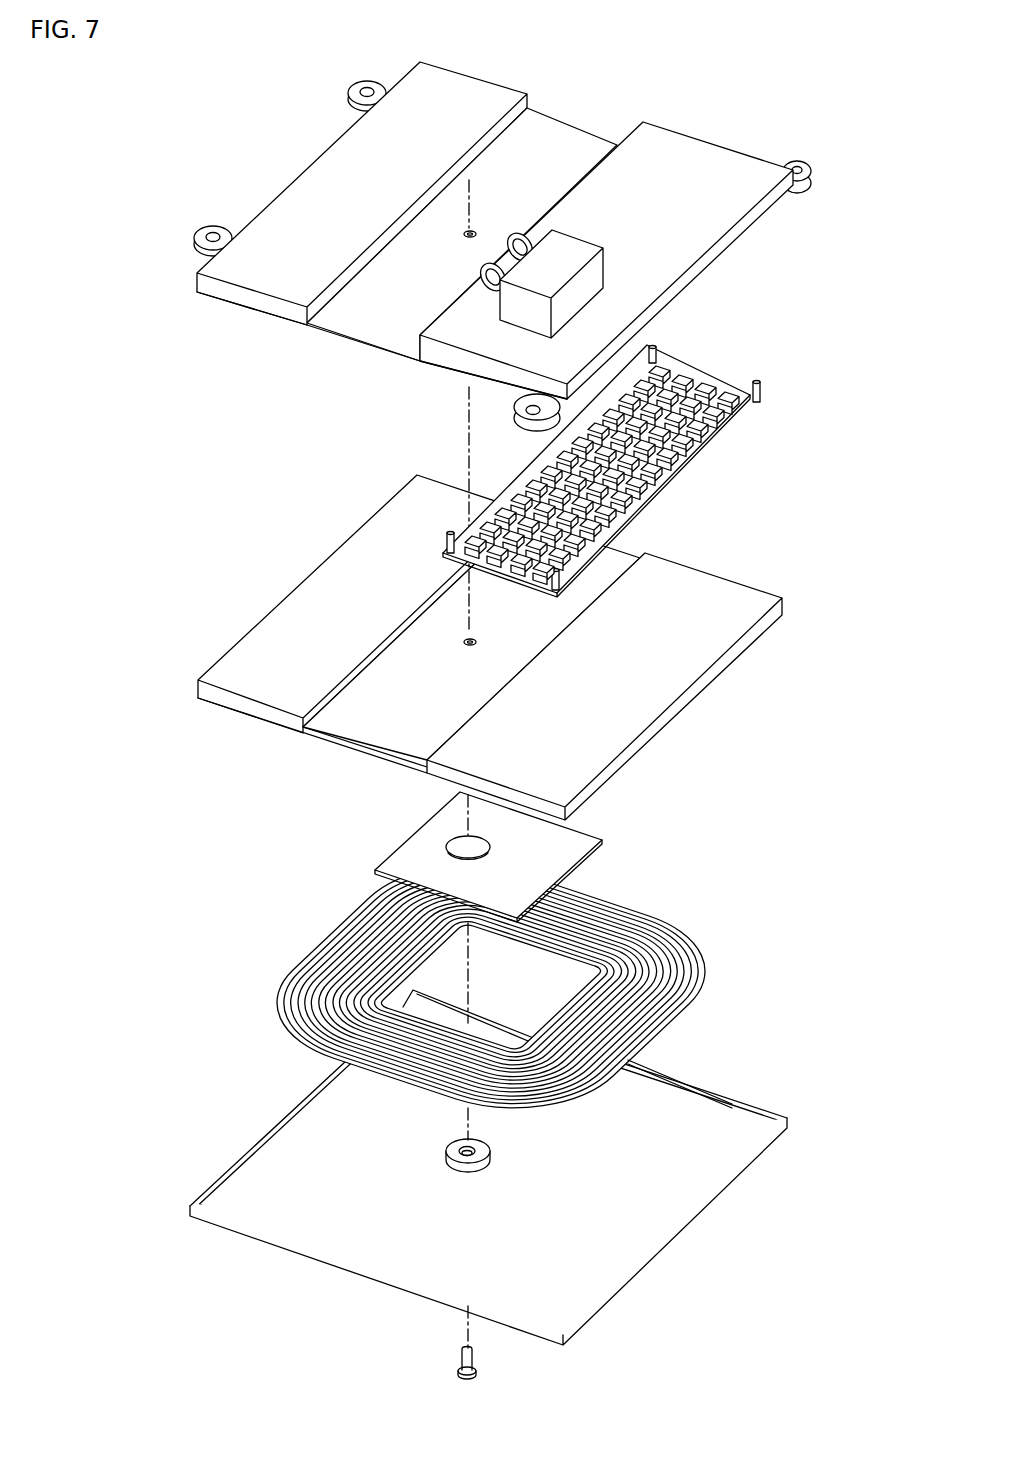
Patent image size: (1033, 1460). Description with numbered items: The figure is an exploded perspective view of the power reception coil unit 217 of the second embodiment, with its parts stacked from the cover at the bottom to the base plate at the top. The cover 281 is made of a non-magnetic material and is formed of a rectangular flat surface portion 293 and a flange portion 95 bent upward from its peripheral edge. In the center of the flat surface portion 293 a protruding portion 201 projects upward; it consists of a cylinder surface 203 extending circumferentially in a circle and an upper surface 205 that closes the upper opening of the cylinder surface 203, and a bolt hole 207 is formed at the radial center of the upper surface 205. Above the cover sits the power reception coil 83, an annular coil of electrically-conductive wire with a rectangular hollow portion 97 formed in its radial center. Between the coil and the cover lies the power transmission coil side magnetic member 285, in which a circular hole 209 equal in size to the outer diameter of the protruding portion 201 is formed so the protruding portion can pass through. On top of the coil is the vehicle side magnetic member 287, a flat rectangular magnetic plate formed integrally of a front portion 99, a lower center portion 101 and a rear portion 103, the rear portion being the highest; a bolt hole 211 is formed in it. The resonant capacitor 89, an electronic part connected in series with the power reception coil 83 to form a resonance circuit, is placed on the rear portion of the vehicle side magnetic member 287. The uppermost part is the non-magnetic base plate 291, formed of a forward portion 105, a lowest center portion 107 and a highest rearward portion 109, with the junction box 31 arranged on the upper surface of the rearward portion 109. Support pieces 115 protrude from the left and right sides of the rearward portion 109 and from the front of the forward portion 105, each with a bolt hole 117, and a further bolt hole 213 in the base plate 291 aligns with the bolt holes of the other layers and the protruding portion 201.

The power reception coil unit 217 is at (208, 144).
The base plate 291 is at (508, 235).
The forward portion 105 is at (317, 168).
The center portion 107 is at (368, 333).
The rearward portion 109 is at (468, 337).
The support pieces 115 is at (356, 90).
The bolt holes 117 is at (213, 234).
The bolt hole 213 is at (475, 233).
The junction box 31 is at (578, 245).
The resonant capacitor 89 is at (724, 366).
The vehicle side magnetic member 287 is at (517, 647).
The front portion 99 is at (307, 595).
The center portion 101 is at (342, 723).
The rear portion 103 is at (637, 690).
The bolt hole 211 is at (468, 645).
The power transmission coil side magnetic member 285 is at (457, 852).
The circular hole 209 is at (460, 845).
The power reception coil 83 is at (500, 977).
The hollow portion 97 is at (433, 972).
The cover 281 is at (490, 1180).
The flat surface portion 293 is at (327, 1228).
The flange portion 95 is at (434, 1272).
The protruding portion 201 is at (467, 1165).
The upper surface 205 is at (487, 1140).
The cylinder surface 203 is at (480, 1167).
The bolt hole 207 is at (461, 1160).